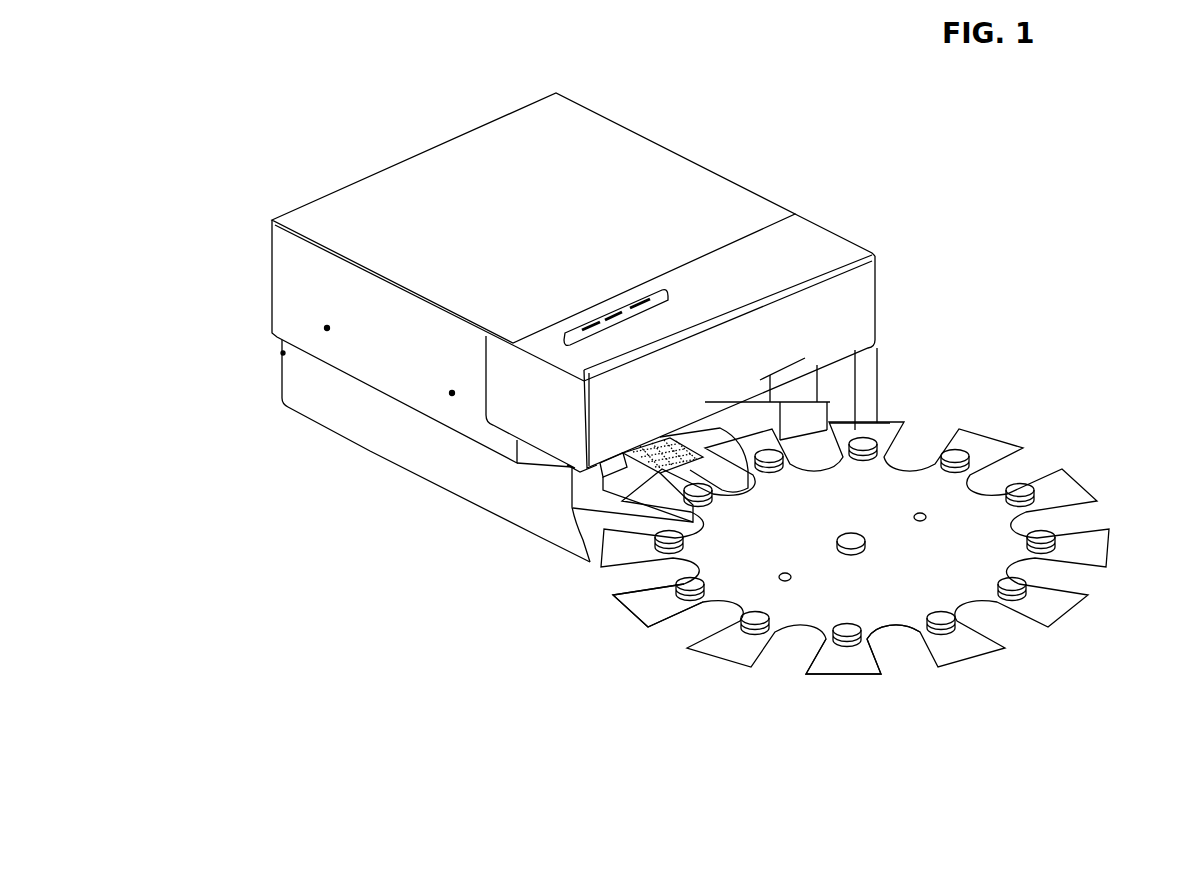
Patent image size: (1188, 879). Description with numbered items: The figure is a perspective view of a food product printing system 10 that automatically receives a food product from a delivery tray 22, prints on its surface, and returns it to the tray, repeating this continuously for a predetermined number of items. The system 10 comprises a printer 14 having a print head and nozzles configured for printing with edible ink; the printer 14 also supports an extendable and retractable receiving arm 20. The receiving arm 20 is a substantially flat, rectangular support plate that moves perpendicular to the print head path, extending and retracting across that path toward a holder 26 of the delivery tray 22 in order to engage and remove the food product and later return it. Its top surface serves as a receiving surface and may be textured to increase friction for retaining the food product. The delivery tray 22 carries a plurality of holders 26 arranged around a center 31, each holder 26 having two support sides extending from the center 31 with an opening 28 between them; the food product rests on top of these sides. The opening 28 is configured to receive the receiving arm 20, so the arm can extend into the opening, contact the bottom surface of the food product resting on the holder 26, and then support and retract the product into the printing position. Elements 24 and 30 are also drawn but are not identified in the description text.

The printing system 10 is at (225, 182).
The printer 14 is at (903, 268).
The receiving arm 20 is at (650, 468).
The delivery tray 22 is at (883, 553).
The holder petal 24 is at (725, 643).
The holder 26 is at (1067, 446).
The opening 28 is at (903, 660).
The vial caps 30 is at (955, 628).
The center 31 is at (868, 518).